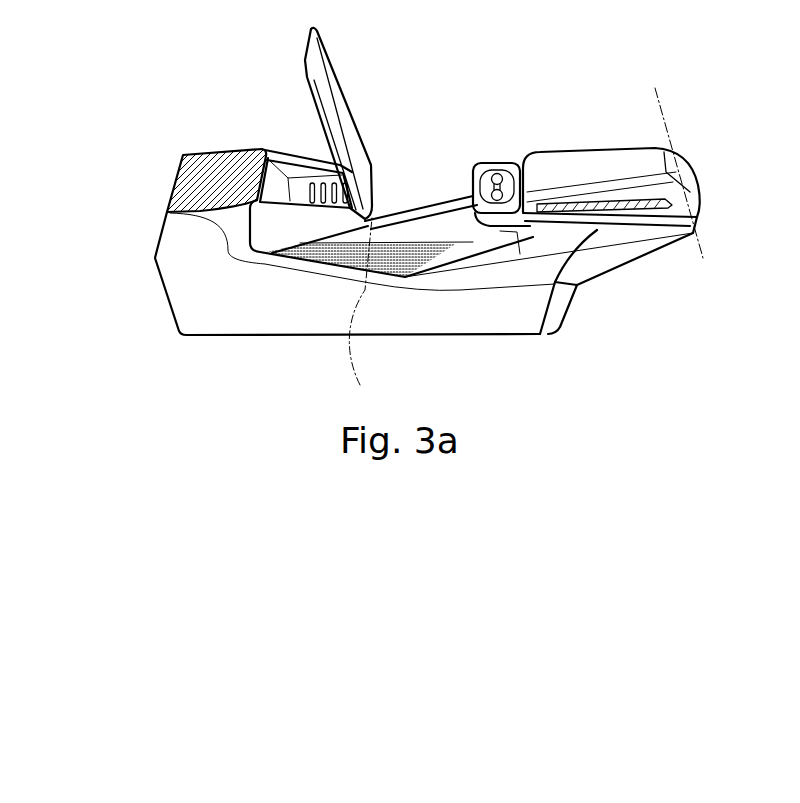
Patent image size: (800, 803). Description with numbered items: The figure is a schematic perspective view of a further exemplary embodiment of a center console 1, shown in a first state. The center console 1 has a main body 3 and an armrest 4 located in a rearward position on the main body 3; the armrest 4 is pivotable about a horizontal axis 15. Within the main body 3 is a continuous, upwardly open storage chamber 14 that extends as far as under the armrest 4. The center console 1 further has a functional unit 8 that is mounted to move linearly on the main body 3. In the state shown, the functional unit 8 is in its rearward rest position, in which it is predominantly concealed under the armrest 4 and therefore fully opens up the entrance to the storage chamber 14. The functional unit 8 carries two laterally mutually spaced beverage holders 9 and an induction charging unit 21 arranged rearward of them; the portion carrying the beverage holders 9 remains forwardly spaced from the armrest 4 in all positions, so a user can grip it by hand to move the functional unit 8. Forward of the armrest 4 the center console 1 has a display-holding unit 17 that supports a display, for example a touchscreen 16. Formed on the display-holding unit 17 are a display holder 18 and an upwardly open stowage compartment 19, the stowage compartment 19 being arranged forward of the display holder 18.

The center console 1 is at (385, 218).
The main body 3 is at (240, 320).
The armrest 4 is at (610, 160).
The functional unit 8 is at (533, 233).
The beverage holder 9 is at (501, 160).
The storage chamber 14 is at (427, 243).
The horizontal axis 15 is at (650, 90).
The touchscreen 16 is at (330, 85).
The display-holding unit 17 is at (243, 197).
The display holder 18 is at (363, 316).
The stowage compartment 19 is at (262, 191).
The induction charging unit 21 is at (592, 220).